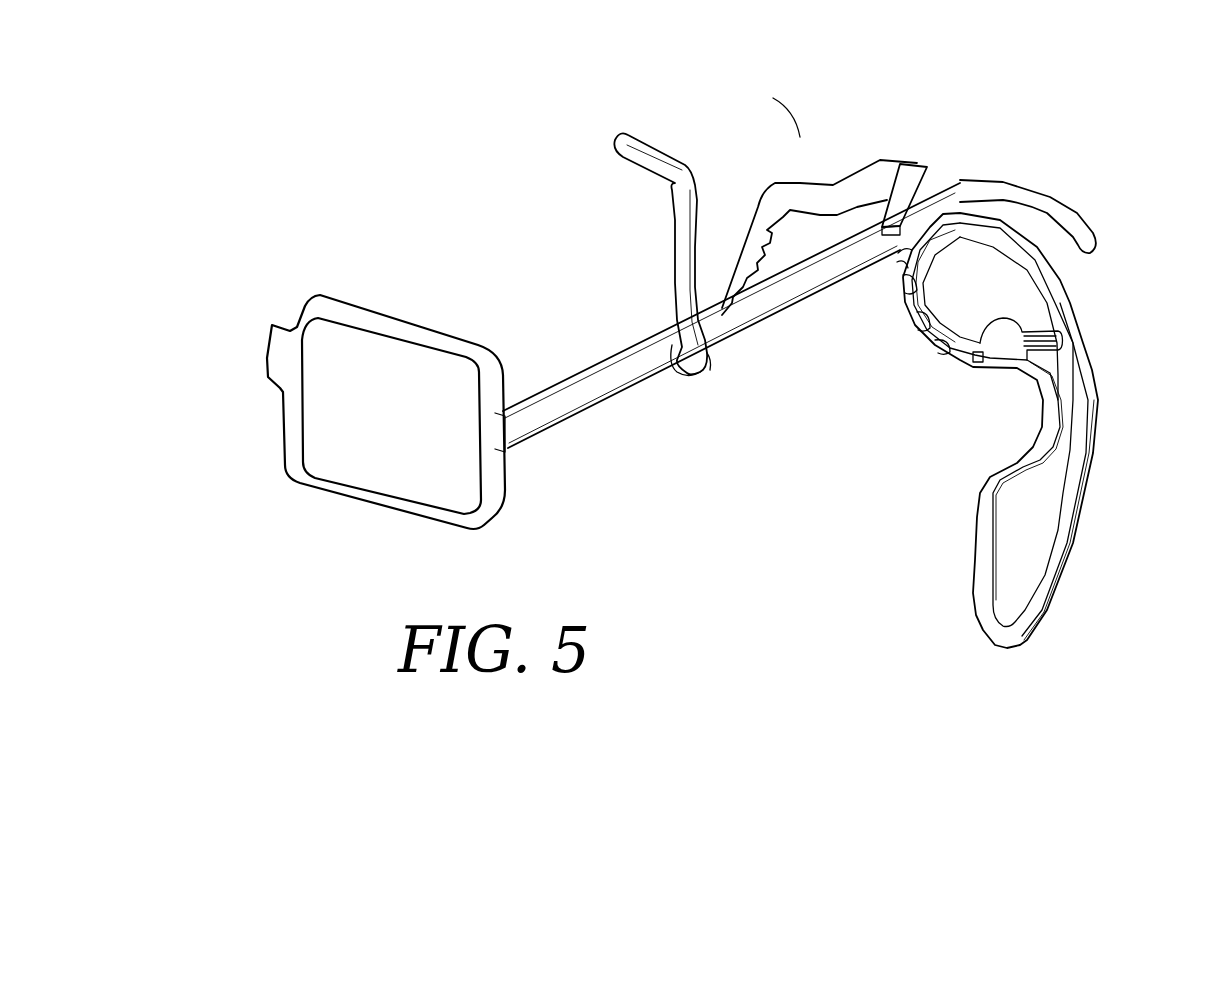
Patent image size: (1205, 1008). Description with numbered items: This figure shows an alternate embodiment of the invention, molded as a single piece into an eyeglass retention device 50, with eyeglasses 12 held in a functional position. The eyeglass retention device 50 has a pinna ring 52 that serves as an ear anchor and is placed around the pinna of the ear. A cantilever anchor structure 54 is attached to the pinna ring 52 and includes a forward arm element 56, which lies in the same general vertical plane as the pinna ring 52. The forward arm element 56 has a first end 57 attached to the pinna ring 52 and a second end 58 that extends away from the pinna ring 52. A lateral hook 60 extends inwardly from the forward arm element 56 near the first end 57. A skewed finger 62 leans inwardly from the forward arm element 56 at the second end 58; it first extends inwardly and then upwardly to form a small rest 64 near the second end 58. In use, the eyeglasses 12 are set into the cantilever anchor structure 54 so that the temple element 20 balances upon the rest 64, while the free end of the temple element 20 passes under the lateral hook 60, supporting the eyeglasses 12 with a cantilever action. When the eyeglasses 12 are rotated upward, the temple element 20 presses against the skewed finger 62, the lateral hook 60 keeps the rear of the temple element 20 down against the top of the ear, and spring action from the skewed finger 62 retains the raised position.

The eyeglasses 12 is at (404, 317).
The temple element 20 is at (598, 393).
The eyeglass retention device 50 is at (763, 97).
The pinna ring 52 is at (1073, 543).
The cantilever anchor structure 54 is at (760, 218).
The forward arm element 56 is at (813, 301).
The first end 57 is at (900, 252).
The second end 58 is at (710, 356).
The lateral hook 60 is at (898, 178).
The skewed finger 62 is at (687, 238).
The rest 64 is at (670, 380).